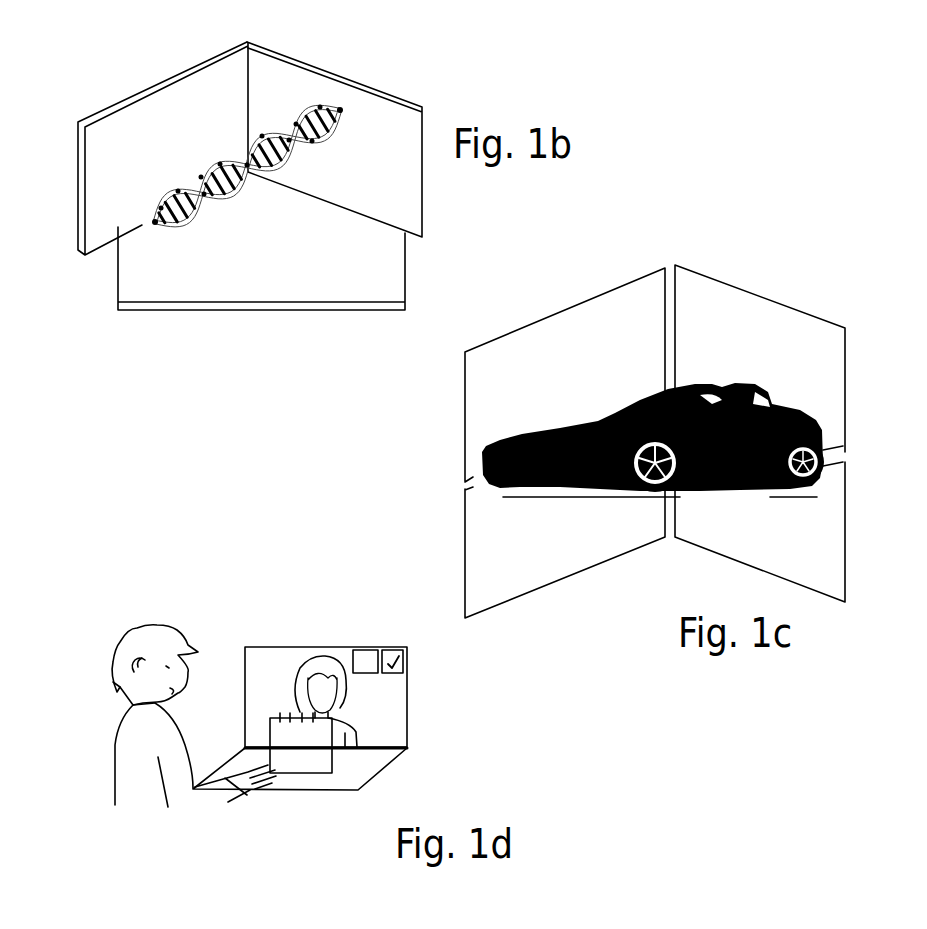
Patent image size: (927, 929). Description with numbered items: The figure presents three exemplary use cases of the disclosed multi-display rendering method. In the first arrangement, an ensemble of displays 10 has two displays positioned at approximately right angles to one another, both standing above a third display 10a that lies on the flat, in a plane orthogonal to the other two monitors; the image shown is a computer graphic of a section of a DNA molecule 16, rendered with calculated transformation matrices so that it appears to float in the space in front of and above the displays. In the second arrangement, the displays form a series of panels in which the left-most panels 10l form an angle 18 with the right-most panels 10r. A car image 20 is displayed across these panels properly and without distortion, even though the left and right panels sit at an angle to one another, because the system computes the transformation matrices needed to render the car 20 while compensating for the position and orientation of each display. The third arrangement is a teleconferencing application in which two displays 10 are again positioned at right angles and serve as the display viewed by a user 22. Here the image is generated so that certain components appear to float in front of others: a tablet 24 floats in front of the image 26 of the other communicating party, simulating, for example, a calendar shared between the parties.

In FIG. 1b, the display 10 is at (134, 103).
In FIG. 1d, the display 10 is at (402, 728).
In FIG. 1b, the third display 10a is at (285, 303).
In FIG. 1b, the DNA molecule 16 is at (318, 155).
In FIG. 1c, the left-most panels 10l is at (472, 521).
In FIG. 1c, the right-most panels 10r is at (843, 447).
In FIG. 1c, the angle 18 is at (707, 297).
In FIG. 1c, the car image 20 is at (570, 483).
In FIG. 1d, the user 22 is at (133, 636).
In FIG. 1d, the tablet 24 is at (312, 772).
In FIG. 1d, the image of the other communicating party 26 is at (315, 657).